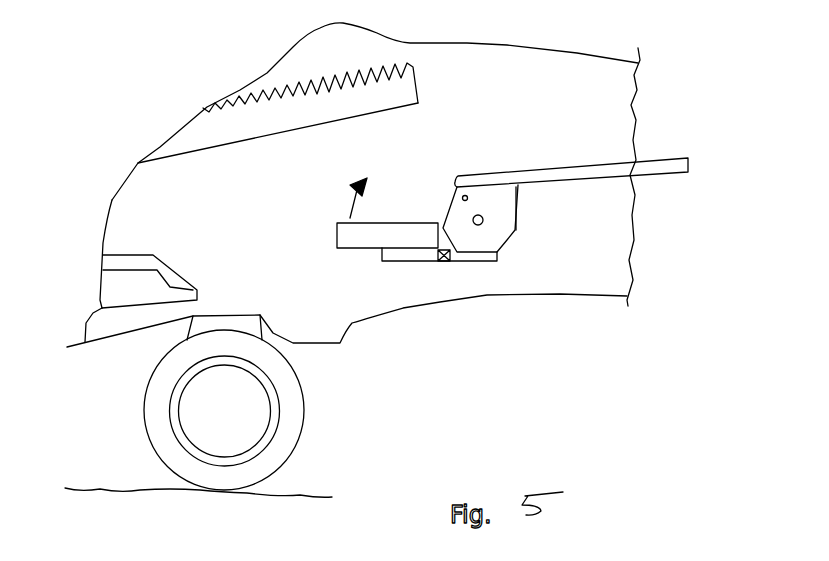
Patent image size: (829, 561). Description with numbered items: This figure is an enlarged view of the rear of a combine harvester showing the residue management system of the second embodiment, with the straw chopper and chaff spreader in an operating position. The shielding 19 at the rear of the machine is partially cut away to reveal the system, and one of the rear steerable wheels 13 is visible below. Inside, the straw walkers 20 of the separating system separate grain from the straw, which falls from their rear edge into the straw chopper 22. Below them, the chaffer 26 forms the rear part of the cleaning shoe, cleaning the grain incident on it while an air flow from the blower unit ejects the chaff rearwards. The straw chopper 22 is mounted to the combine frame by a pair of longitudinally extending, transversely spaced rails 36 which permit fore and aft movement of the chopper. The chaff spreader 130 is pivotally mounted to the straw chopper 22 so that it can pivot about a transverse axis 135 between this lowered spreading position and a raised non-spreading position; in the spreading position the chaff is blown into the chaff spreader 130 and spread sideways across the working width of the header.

The rear steerable wheels 13 is at (290, 460).
The shielding 19 is at (628, 108).
The straw walkers 20 is at (322, 116).
The straw chopper 22 is at (502, 232).
The chaffer 26 is at (123, 290).
The rails 36 is at (588, 163).
The chaff spreader 130 is at (395, 240).
The transverse axis 135 is at (442, 249).